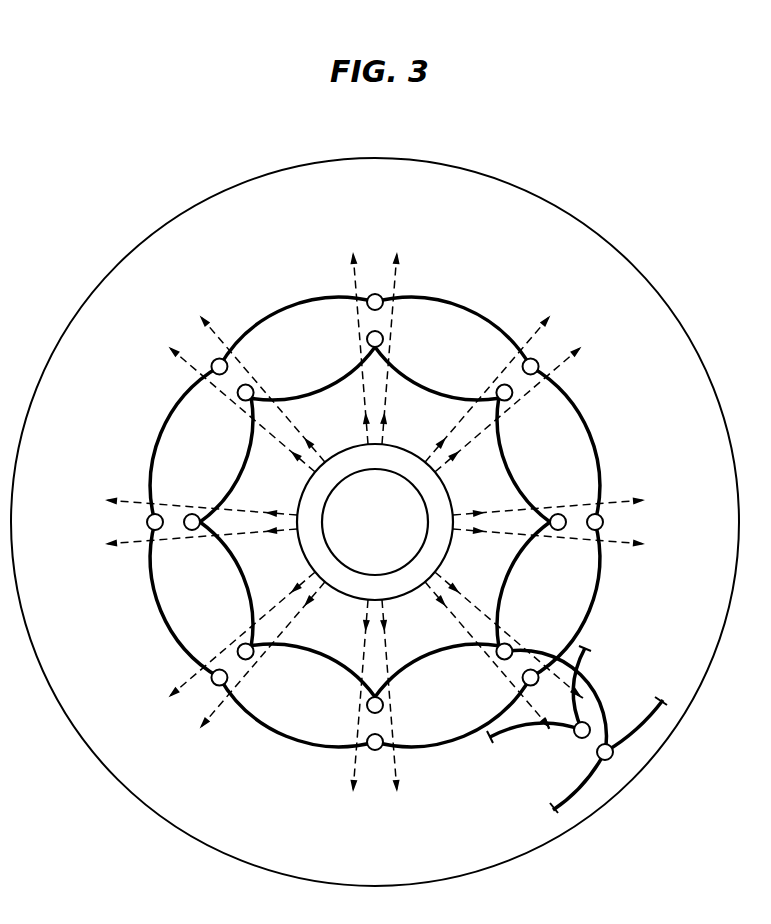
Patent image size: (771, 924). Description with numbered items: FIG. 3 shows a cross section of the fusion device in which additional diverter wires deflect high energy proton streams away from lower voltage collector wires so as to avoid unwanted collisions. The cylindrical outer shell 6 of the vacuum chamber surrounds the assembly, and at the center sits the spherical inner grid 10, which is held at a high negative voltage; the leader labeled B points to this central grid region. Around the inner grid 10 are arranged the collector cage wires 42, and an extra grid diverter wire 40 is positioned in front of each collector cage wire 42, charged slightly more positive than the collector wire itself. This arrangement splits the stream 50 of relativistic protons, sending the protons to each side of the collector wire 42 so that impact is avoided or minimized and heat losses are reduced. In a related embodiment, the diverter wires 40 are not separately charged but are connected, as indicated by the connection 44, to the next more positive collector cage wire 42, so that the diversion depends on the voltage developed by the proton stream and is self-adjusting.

The cylindrical outer shell 6 is at (192, 210).
The central hub bore B is at (351, 445).
The spherical inner grid 10 is at (340, 481).
The stream of relativistic protons 50 is at (382, 386).
The connection 44 is at (540, 648).
The collector cage wire 42 is at (534, 364).
The grid diverter wire 40 is at (553, 518).